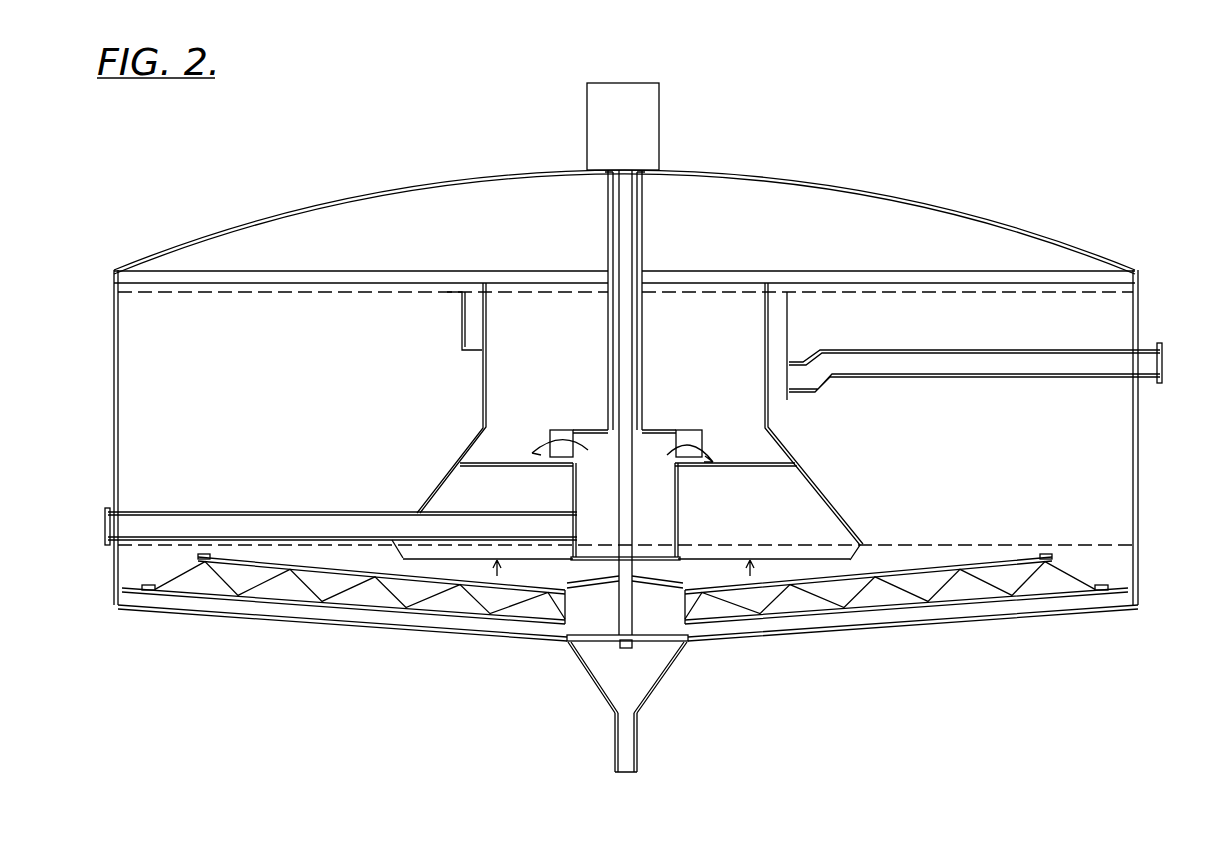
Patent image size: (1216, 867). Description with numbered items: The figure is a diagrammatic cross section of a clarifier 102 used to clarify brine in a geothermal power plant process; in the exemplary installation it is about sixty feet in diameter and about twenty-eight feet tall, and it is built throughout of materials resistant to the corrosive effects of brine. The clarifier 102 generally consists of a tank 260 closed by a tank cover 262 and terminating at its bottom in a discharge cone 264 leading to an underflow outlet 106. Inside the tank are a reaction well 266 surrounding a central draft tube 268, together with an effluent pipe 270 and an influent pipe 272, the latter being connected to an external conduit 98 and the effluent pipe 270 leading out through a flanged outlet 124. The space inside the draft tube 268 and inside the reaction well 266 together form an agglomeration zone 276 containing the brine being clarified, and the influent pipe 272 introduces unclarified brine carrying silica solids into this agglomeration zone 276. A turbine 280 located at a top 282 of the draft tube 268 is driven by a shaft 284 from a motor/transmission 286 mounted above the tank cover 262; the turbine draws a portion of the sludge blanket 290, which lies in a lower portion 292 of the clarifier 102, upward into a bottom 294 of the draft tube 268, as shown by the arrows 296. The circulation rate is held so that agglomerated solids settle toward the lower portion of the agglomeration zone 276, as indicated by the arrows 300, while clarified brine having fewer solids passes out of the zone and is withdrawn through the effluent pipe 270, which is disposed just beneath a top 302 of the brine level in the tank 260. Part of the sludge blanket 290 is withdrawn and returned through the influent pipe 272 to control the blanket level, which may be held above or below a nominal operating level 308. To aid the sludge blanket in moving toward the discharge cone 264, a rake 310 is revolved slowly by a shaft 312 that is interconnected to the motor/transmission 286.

The conduit 98 is at (107, 508).
The clarifier 102 is at (885, 171).
The underflow outlet 106 is at (640, 752).
The overflow outlet flange 124 is at (1150, 347).
The tank 260 is at (1140, 452).
The tank cover 262 is at (390, 186).
The discharge cone 264 is at (670, 693).
The reaction well 266 is at (828, 504).
The draft tube 268 is at (679, 530).
The effluent pipe 270 is at (928, 386).
The influent pipe 272 is at (266, 513).
The agglomeration zone 276 is at (666, 508).
The turbine 280 is at (703, 450).
The top of the draft tube 282 is at (660, 458).
The shaft 284 is at (645, 247).
The motor/transmission 286 is at (587, 105).
The sludge blanket 290 is at (880, 548).
The lower portion of the clarifier 292 is at (1140, 545).
The bottom of the draft tube 294 is at (672, 557).
The arrows 296 is at (590, 572).
The arrows 300 is at (624, 571).
The top of the brine level 302 is at (880, 290).
The nominal operating level 308 is at (985, 548).
The rake 310 is at (915, 608).
The shaft 312 is at (619, 488).